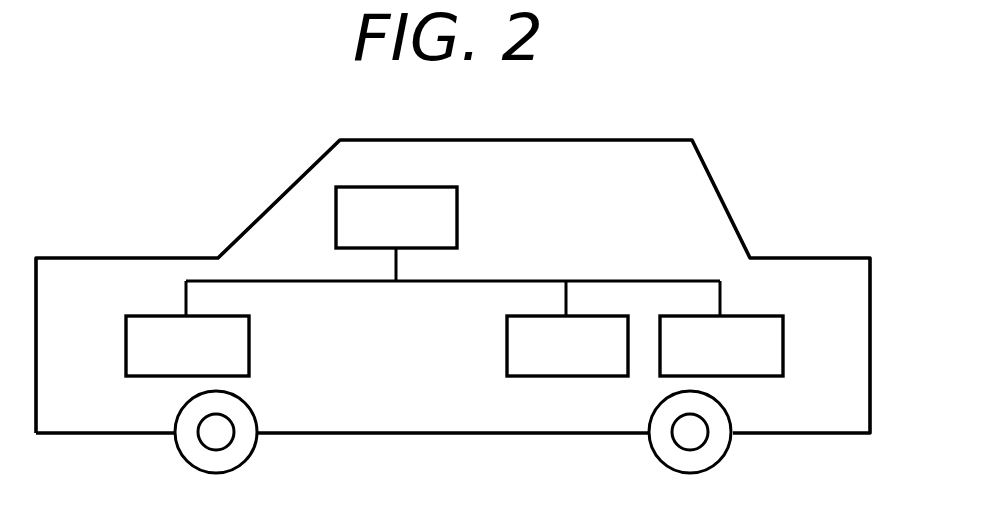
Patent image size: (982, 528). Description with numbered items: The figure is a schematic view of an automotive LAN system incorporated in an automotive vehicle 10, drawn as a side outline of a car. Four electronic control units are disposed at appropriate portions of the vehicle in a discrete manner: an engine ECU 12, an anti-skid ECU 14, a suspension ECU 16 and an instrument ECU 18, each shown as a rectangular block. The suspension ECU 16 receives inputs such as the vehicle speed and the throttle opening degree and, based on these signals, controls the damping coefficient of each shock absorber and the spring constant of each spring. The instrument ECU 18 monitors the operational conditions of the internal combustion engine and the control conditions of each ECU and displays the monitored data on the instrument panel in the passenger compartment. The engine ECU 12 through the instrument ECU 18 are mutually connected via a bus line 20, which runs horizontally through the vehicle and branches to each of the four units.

The automotive vehicle 10 is at (708, 130).
The engine ECU 12 is at (228, 316).
The anti-skid ECU 14 is at (605, 316).
The suspension ECU 16 is at (762, 316).
The instrument ECU 18 is at (425, 187).
The bus line 20 is at (492, 281).